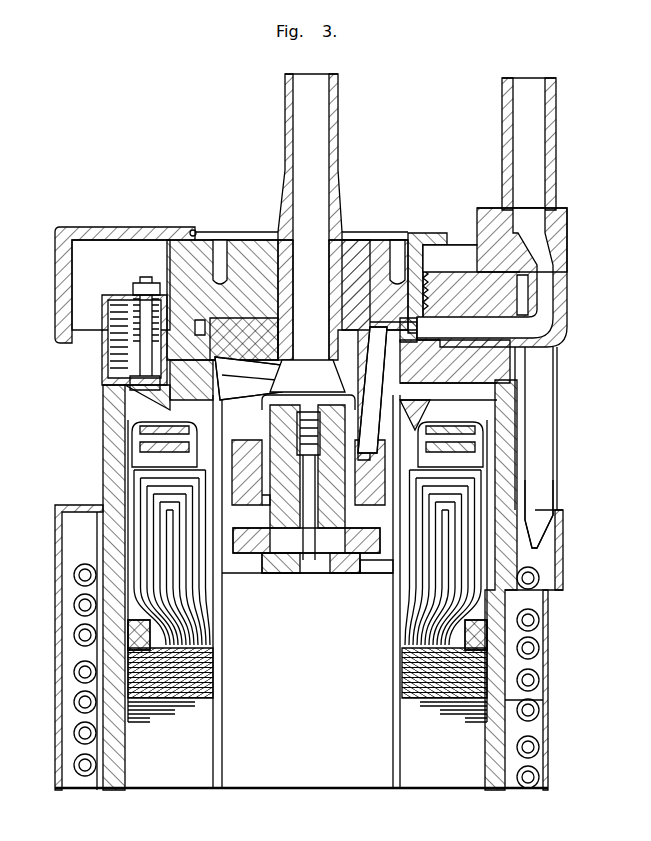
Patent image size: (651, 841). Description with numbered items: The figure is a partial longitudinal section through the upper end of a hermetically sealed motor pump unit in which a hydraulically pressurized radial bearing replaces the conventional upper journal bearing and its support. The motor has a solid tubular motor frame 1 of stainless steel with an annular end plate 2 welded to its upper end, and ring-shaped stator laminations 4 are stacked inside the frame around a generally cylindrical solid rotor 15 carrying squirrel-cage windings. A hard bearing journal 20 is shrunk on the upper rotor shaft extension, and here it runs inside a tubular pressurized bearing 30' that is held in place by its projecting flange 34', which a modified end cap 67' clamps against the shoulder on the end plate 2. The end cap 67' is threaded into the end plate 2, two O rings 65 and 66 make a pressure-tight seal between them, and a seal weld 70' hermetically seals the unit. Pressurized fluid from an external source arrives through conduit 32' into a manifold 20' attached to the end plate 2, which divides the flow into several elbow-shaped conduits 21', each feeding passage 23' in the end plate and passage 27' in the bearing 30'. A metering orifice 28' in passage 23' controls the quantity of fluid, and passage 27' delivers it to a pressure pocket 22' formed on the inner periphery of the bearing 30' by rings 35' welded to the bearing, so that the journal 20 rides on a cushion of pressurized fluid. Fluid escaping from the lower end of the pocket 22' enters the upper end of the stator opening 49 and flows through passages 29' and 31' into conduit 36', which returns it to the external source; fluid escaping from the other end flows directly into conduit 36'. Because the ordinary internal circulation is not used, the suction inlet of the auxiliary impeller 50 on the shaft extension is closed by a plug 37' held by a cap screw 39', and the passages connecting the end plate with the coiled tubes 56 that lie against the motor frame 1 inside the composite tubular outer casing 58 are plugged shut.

The motor frame 1 is at (510, 553).
The end plate 2 is at (497, 363).
The stator laminations 4 is at (457, 778).
The rotor 15 is at (365, 772).
The bearing journal 20 is at (307, 481).
The manifold 20' is at (539, 240).
The conduit 21' is at (506, 277).
The pressure pocket 22' is at (406, 390).
The passage 23' is at (455, 358).
The passage 27' is at (410, 390).
The metering orifice 28' is at (411, 330).
The passage 29' is at (248, 378).
The pressurized bearing 30' is at (248, 485).
The passage 31' is at (248, 371).
The conduit 32' is at (544, 144).
The projecting flange 34' is at (158, 333).
The rings 35' is at (324, 445).
The conduit 36' is at (326, 267).
The plug 37' is at (306, 563).
The cap screw 39' is at (290, 575).
The stator opening 49 is at (366, 562).
The auxiliary impeller 50 is at (372, 560).
The coiled tubes 56 is at (550, 497).
The outer casing 58 is at (62, 695).
The O ring 65 is at (216, 297).
The O ring 66 is at (214, 348).
The end cap 67' is at (166, 274).
The seal weld 70' is at (398, 272).